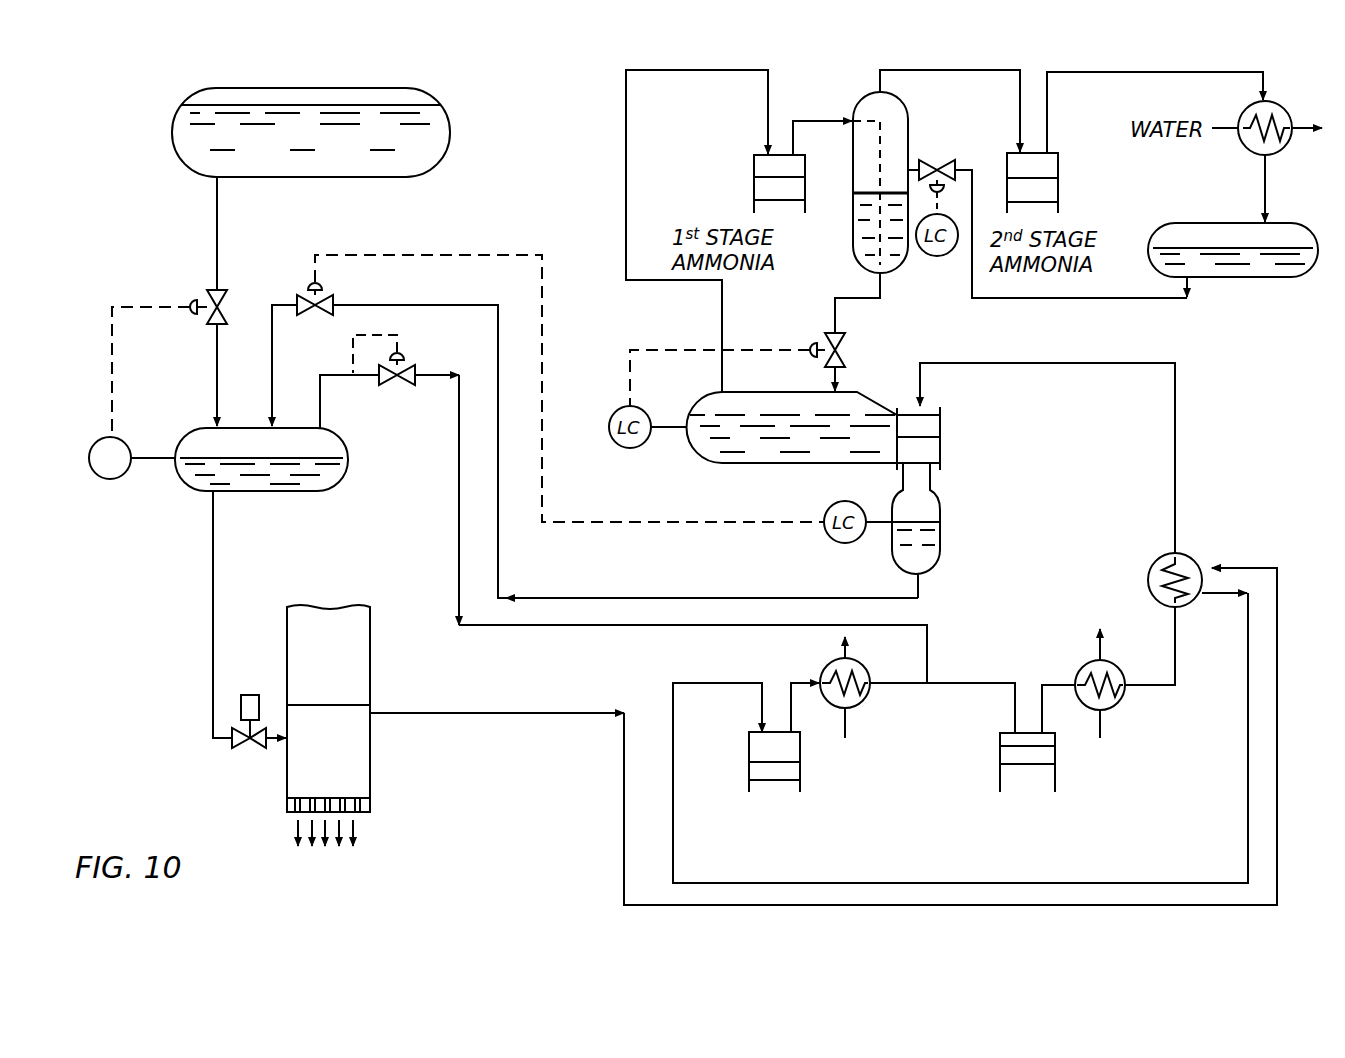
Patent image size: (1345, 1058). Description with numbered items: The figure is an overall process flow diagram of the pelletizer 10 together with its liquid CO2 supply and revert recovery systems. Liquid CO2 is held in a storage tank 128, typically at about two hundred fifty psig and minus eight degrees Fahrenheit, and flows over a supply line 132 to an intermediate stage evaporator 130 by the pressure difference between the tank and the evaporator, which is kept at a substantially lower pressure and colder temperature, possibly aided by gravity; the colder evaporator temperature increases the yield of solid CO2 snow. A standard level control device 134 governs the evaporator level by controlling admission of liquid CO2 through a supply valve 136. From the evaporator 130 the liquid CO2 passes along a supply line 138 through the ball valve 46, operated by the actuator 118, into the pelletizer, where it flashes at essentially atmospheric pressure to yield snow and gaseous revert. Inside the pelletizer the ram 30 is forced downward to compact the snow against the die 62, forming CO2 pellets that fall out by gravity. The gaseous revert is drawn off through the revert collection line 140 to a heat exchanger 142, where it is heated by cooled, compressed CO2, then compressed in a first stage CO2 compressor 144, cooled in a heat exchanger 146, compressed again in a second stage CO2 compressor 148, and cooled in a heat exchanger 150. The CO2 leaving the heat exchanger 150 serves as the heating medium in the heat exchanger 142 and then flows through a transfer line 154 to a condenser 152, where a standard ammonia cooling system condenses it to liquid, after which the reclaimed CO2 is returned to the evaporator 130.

The pelletizer 10 is at (399, 383).
The ram 30 is at (371, 645).
The ball valve 46 is at (243, 752).
The die 62 is at (373, 807).
The actuator 118 is at (250, 694).
The storage tank 128 is at (453, 142).
The intermediate stage evaporator 130 is at (350, 470).
The supply line 132 is at (219, 222).
The level control device 134 is at (96, 442).
The supply valve 136 is at (212, 290).
The supply line 138 is at (213, 624).
The revert collection line 140 is at (548, 712).
The heat exchanger 142 is at (1187, 556).
The first stage CO2 compressor 144 is at (802, 770).
The heat exchanger 146 is at (870, 700).
The second stage CO2 compressor 148 is at (1000, 758).
The heat exchanger 150 is at (1124, 700).
The condenser 152 is at (692, 458).
The transfer line 154 is at (1035, 365).